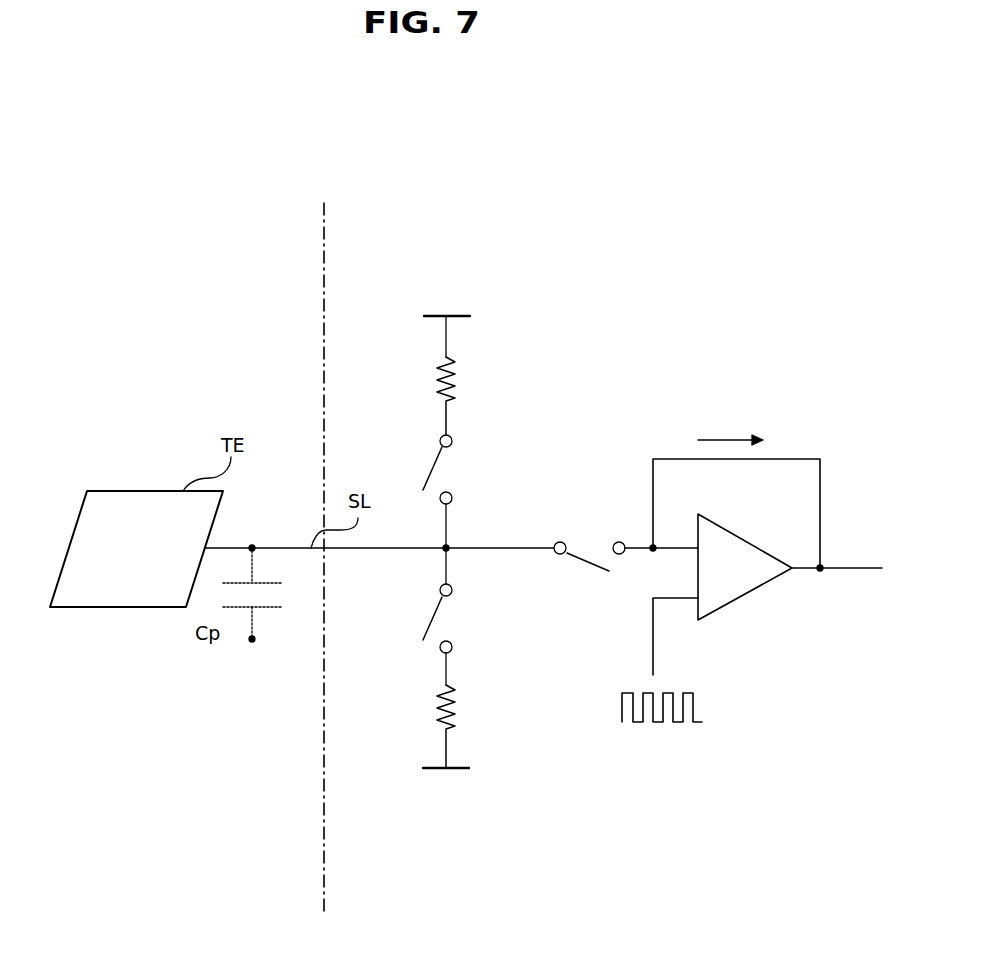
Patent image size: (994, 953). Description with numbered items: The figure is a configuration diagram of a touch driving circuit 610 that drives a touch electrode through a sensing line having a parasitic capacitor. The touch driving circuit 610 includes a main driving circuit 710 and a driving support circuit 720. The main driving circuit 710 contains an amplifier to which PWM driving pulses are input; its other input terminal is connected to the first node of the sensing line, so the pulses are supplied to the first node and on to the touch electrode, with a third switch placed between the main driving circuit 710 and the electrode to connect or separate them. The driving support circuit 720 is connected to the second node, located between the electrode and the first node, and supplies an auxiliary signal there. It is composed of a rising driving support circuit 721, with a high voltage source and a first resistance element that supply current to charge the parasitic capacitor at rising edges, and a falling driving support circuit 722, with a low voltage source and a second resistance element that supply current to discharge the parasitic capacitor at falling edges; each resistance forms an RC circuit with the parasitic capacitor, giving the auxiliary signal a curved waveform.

The touch driving circuit 610 is at (788, 251).
The main driving circuit 710 is at (818, 426).
The driving support circuit 720 is at (459, 258).
The rising driving support circuit 721 is at (512, 403).
The falling driving support circuit 722 is at (372, 724).